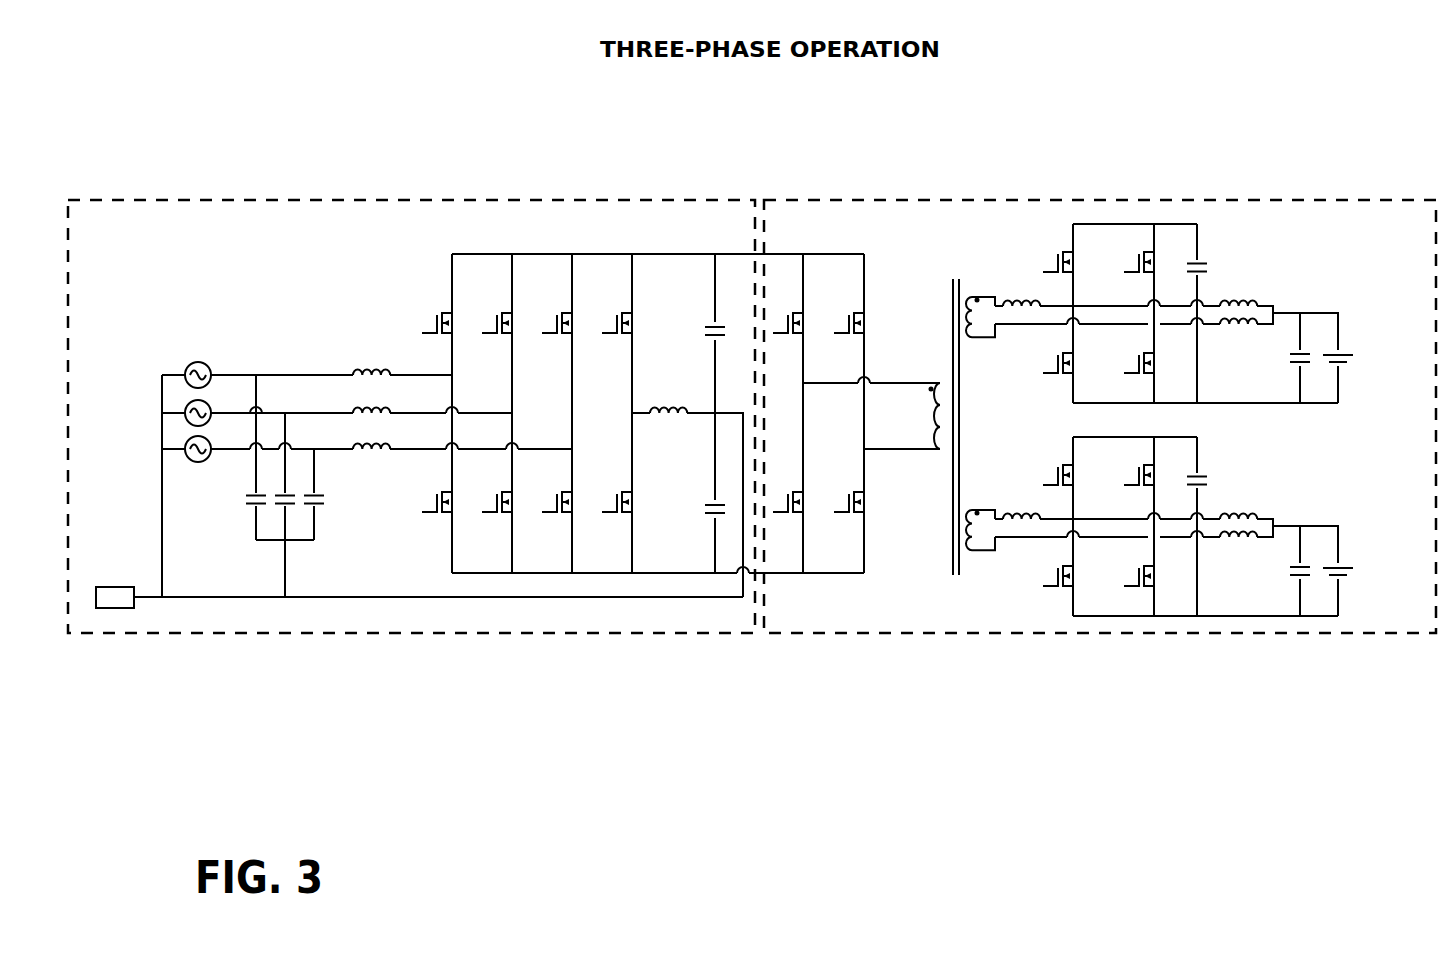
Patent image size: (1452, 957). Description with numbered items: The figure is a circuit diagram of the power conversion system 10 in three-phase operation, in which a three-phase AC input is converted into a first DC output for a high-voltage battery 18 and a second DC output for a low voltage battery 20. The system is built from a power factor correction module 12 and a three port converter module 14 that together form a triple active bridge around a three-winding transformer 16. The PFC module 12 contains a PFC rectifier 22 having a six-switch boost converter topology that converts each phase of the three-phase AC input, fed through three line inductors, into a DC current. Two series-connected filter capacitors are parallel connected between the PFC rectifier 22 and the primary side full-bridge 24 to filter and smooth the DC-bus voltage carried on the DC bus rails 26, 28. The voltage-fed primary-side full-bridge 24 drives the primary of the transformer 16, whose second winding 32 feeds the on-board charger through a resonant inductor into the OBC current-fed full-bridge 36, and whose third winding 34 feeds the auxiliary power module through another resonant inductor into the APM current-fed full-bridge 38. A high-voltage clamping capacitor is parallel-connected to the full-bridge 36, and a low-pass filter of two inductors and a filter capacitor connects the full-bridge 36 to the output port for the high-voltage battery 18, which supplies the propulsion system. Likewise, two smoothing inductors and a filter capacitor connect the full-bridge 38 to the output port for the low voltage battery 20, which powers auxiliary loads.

The power conversion system 10 is at (350, 120).
The power factor correction (PFC) module 12 is at (278, 200).
The three port converter (TPC) module 14 is at (1225, 200).
The three-winding transformer 16 is at (993, 162).
The high-voltage battery 18 is at (1350, 382).
The low voltage battery 20 is at (1360, 536).
The PFC rectifier 22 is at (702, 683).
The primary-side full-bridge 24 is at (880, 655).
The DC bus rail 26 is at (668, 246).
The DC bus rail 28 is at (668, 575).
The second winding 32 is at (985, 275).
The third winding 34 is at (984, 570).
The OBC current-fed full-bridge 36 is at (1172, 174).
The APM current-fed full-bridge 38 is at (1172, 660).